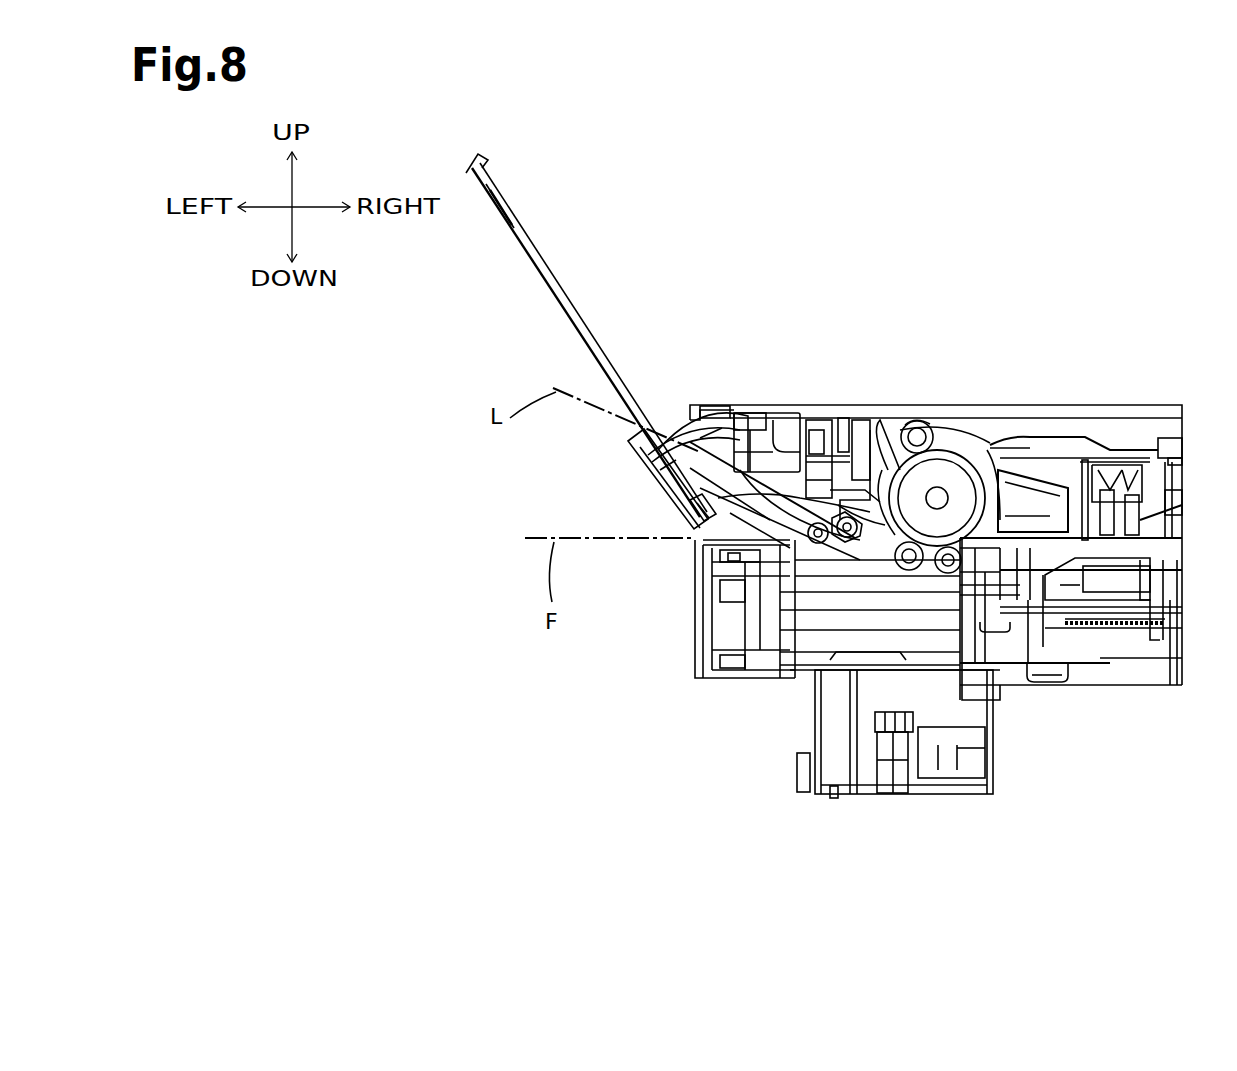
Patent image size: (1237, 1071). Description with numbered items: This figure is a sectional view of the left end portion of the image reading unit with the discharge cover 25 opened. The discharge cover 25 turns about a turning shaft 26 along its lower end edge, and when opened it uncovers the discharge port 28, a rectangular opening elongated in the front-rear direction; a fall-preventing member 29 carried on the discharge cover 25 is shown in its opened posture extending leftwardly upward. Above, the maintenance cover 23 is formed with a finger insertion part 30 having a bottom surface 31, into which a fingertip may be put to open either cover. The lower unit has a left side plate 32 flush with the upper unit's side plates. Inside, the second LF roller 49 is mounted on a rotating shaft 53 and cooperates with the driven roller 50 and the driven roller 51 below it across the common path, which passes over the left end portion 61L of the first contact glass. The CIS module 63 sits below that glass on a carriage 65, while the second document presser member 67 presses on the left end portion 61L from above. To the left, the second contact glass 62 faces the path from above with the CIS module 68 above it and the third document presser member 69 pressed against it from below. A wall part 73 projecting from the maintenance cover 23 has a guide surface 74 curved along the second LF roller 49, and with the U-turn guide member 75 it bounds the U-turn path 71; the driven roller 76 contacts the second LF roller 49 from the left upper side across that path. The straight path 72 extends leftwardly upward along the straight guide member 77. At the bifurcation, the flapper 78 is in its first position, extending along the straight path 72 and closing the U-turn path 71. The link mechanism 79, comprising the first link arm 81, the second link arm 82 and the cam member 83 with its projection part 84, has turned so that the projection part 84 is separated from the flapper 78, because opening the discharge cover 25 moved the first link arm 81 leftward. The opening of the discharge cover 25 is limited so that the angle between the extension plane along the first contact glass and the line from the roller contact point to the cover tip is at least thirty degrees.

The maintenance cover 23 is at (962, 417).
The discharge cover 25 is at (636, 445).
The turning shaft 26 is at (693, 506).
The discharge port 28 is at (692, 438).
The fall-preventing member 29 is at (497, 203).
The finger insertion part 30 is at (738, 416).
The bottom surface 31 is at (752, 408).
The left side plate 32 is at (695, 620).
The second LF roller 49 is at (984, 466).
The driven roller 50 is at (955, 575).
The driven roller 51 is at (805, 792).
The rotating shaft 53 is at (950, 572).
The left end portion of the first contact glass 61L is at (1120, 630).
The second contact glass 62 is at (1093, 458).
The CIS module 63 is at (1126, 575).
The carriage 65 is at (1168, 565).
The second document presser member 67 is at (1076, 602).
The CIS module 68 is at (1040, 500).
The third document presser member 69 is at (1043, 680).
The U-turn path 71 is at (900, 460).
The straight path 72 is at (813, 468).
The wall part 73 is at (852, 485).
The guide surface 74 is at (900, 455).
The U-turn guide member 75 is at (1113, 440).
The driven roller 76 is at (935, 475).
The straight guide member 77 is at (898, 556).
The flapper 78 is at (874, 470).
The link mechanism 79 is at (822, 478).
The first link arm 81 is at (682, 448).
The second link arm 82 is at (860, 480).
The cam member 83 is at (816, 545).
The projection part 84 is at (938, 566).